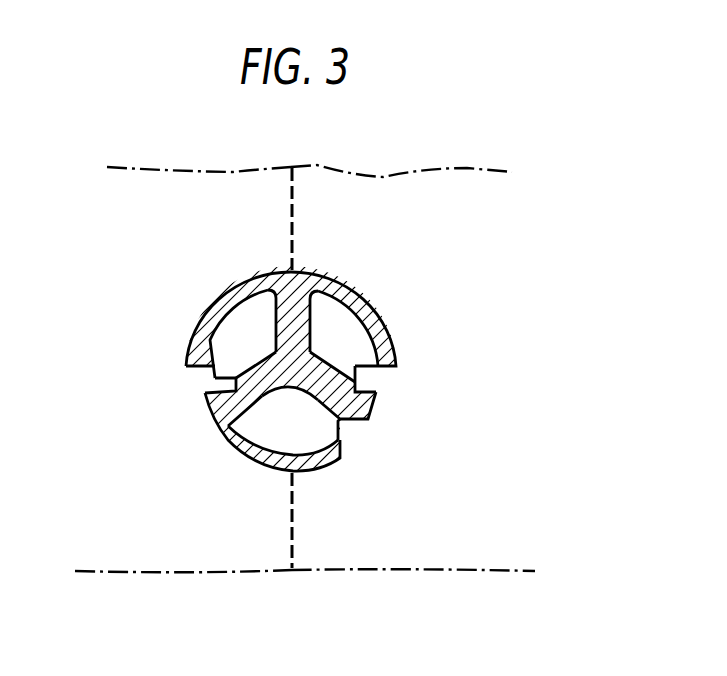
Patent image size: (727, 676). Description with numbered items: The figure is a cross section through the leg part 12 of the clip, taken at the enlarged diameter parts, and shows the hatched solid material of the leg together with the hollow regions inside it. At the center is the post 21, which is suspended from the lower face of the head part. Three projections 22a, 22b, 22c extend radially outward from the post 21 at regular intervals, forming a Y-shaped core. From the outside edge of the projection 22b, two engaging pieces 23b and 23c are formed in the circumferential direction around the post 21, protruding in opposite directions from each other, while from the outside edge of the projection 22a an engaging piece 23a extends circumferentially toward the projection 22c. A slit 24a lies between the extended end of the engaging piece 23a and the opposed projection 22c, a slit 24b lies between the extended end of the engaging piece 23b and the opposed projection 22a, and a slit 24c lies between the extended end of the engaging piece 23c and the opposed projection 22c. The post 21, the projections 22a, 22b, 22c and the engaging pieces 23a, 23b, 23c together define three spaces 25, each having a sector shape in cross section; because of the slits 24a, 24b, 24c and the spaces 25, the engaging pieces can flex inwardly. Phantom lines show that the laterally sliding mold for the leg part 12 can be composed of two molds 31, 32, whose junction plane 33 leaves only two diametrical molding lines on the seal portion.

The leg part 12 is at (310, 374).
The post 21 is at (306, 338).
The projection 22a is at (262, 400).
The projection 22b is at (275, 332).
The projection 22c is at (338, 380).
The engaging piece 23a is at (308, 450).
The engaging piece 23b is at (212, 300).
The engaging piece 23c is at (365, 320).
The slit 24a is at (350, 432).
The slit 24b is at (218, 378).
The slit 24c is at (370, 383).
The space 25 is at (327, 317).
The mold 31 is at (171, 184).
The mold 32 is at (418, 198).
The junction plane 33 is at (289, 195).